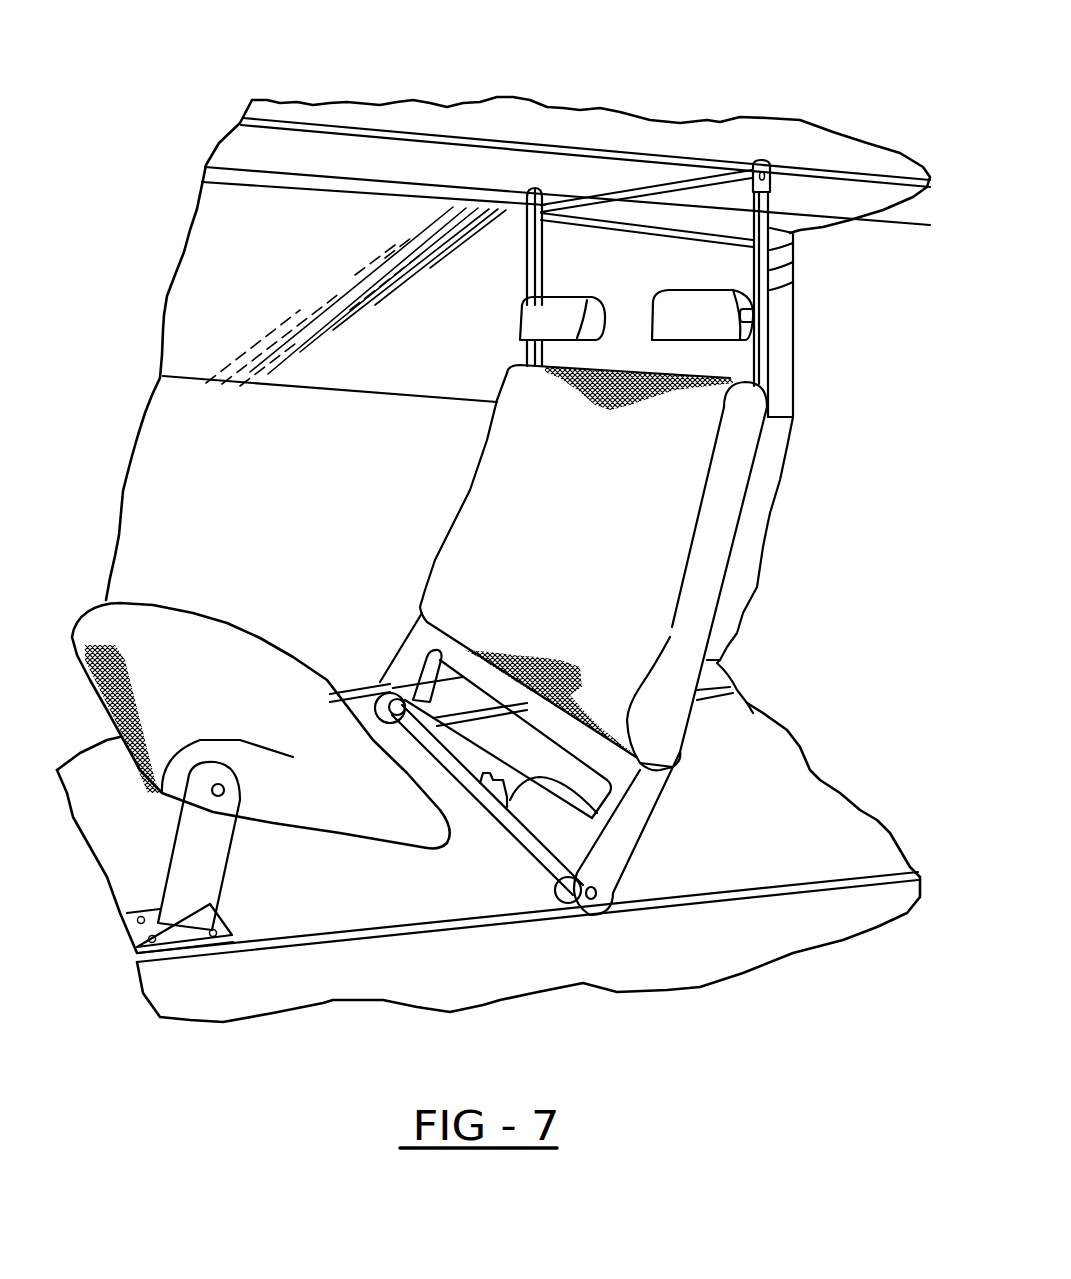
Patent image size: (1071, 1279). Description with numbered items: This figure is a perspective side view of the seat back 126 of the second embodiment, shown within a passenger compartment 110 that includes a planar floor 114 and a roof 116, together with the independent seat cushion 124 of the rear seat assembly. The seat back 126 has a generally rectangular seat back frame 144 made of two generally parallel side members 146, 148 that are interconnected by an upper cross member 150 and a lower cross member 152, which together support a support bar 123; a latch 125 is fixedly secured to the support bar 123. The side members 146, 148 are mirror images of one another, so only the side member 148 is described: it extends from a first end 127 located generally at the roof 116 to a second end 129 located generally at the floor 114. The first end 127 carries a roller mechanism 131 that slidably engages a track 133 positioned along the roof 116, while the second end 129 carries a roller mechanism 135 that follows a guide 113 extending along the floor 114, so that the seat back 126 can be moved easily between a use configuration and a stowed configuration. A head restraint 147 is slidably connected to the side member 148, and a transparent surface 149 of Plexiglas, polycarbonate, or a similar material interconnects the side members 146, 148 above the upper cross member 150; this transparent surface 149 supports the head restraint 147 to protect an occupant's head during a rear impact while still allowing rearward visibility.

The passenger compartment 110 is at (477, 546).
The guides 113 is at (493, 920).
The floor 114 is at (378, 950).
The roof 116 is at (541, 112).
The support bar 123 is at (530, 843).
The seat cushion 124 is at (217, 633).
The latch 125 is at (640, 817).
The seat back 126 is at (767, 527).
The first end 127 is at (793, 207).
The second end 129 is at (637, 848).
The roller mechanism 131 is at (763, 165).
The track 133 is at (697, 150).
The roller mechanism 135 is at (563, 920).
The seat back frame 144 is at (773, 270).
The side member 146 is at (527, 265).
The head restraint 147 is at (772, 316).
The side member 148 is at (750, 316).
The transparent surface 149 is at (677, 269).
The upper cross member 150 is at (497, 408).
The lower cross member 152 is at (630, 712).